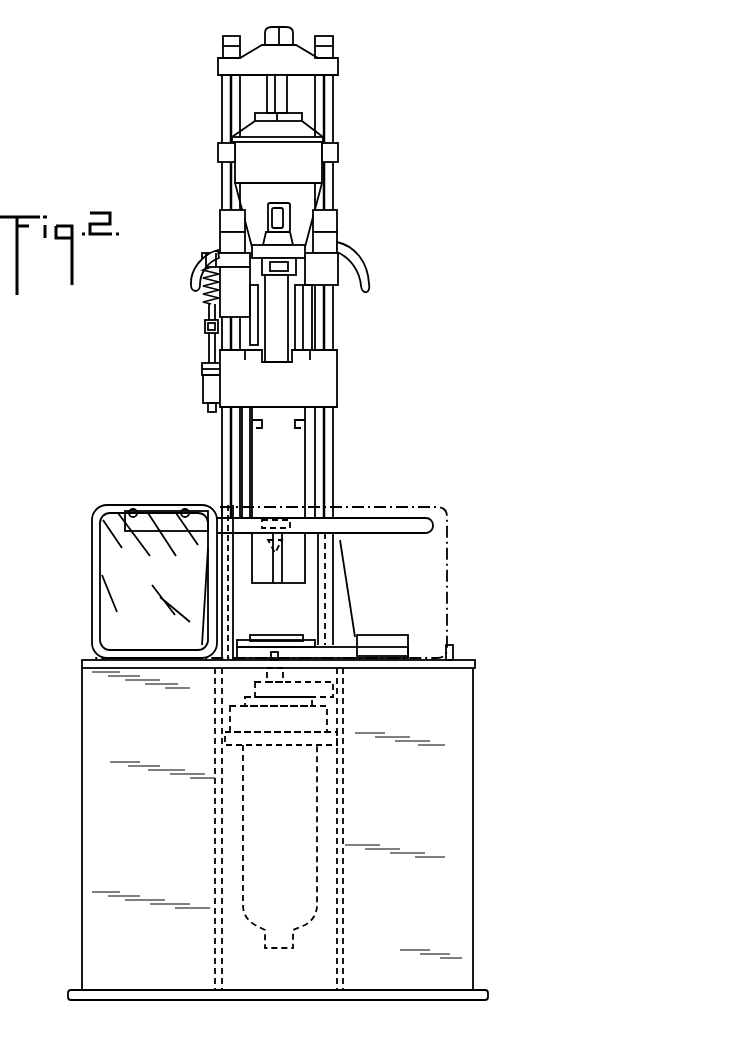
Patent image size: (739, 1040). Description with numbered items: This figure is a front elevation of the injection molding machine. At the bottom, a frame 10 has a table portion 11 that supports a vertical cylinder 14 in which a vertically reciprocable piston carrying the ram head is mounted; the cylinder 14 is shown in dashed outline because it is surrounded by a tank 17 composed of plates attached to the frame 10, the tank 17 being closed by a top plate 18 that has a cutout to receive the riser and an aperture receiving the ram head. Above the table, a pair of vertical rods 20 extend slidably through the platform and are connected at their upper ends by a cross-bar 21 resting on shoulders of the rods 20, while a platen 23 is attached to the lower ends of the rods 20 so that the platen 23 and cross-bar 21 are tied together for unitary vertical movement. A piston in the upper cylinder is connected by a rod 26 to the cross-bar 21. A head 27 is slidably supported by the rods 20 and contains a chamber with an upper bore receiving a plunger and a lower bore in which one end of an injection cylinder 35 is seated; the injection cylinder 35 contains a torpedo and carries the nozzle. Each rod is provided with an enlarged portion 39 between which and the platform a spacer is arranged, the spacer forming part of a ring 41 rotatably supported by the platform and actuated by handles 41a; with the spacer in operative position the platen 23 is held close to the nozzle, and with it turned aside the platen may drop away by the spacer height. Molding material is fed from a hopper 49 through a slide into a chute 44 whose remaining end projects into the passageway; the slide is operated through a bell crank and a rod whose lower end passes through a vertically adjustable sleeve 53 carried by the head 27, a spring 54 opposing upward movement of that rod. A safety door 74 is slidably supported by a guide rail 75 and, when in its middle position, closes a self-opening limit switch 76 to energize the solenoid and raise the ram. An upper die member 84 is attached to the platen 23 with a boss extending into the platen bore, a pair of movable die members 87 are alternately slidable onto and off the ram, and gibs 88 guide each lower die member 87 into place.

The frame 10 is at (337, 955).
The table portion 11 is at (292, 748).
The vertical cylinder 14 is at (228, 736).
The tank 17 is at (450, 776).
The top plate 18 is at (455, 660).
The vertical rods 20 is at (229, 118).
The cross-bar 21 is at (339, 70).
The platen 23 is at (335, 541).
The rod 26 is at (268, 91).
The head 27 is at (340, 396).
The injection cylinder 35 is at (312, 461).
The enlarged portion 39 is at (230, 216).
The ring 41 is at (230, 234).
The handles 41a is at (189, 281).
The chute 44 is at (287, 328).
The hopper 49 is at (312, 166).
The vertically adjustable sleeve 53 is at (203, 373).
The spring 54 is at (206, 295).
The safety door 74 is at (112, 612).
The guide rail 75 is at (150, 525).
The self-opening limit switch 76 is at (265, 681).
The upper die member 84 is at (301, 578).
The movable die members 87 is at (275, 635).
The gibs 88 is at (293, 648).